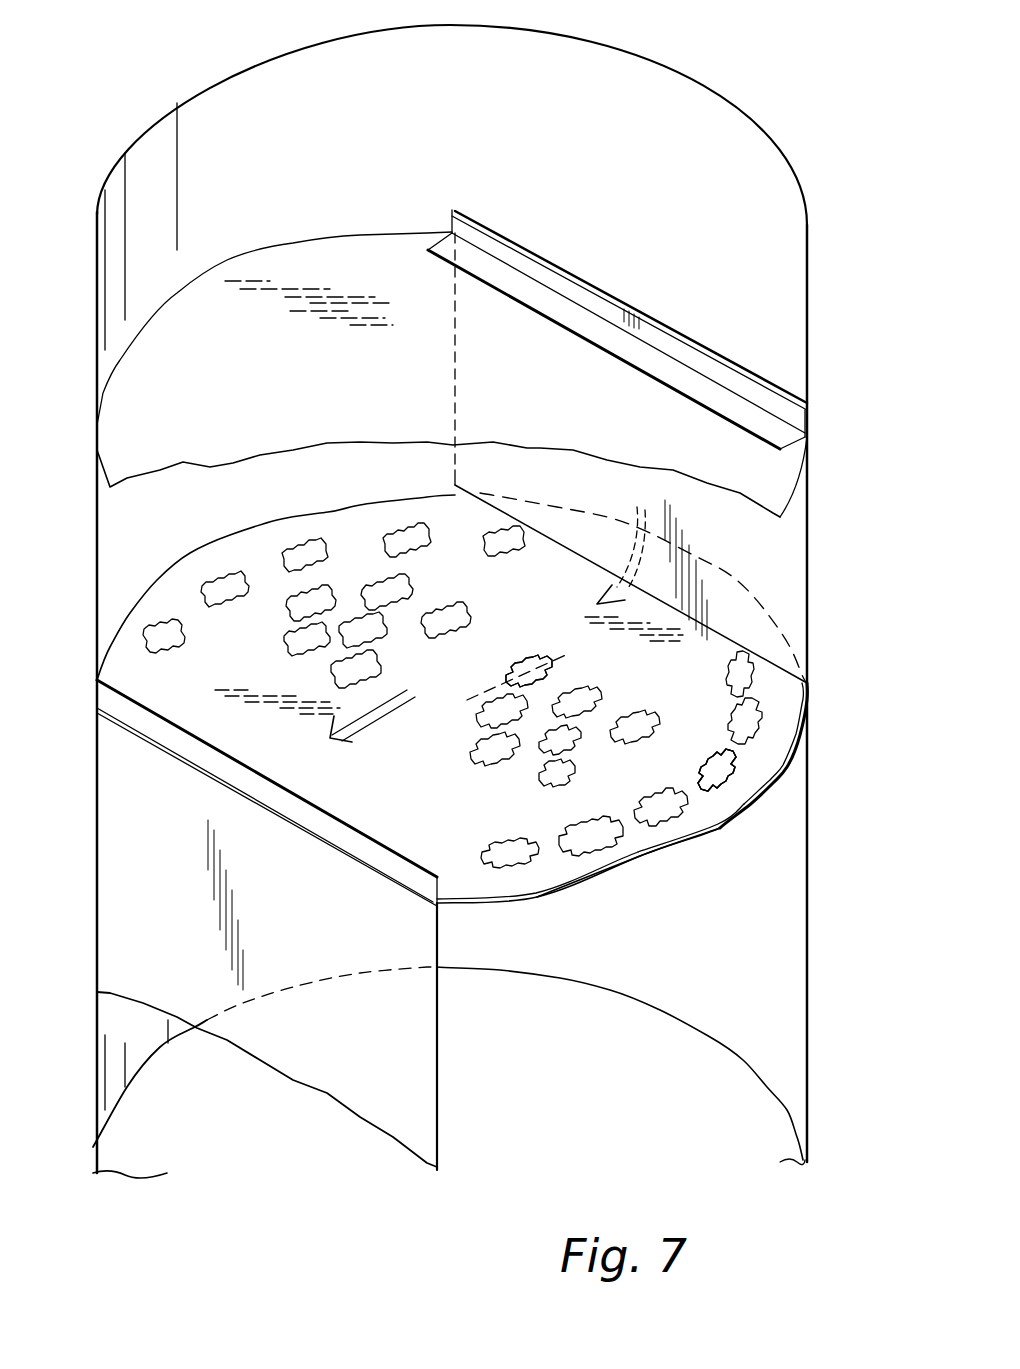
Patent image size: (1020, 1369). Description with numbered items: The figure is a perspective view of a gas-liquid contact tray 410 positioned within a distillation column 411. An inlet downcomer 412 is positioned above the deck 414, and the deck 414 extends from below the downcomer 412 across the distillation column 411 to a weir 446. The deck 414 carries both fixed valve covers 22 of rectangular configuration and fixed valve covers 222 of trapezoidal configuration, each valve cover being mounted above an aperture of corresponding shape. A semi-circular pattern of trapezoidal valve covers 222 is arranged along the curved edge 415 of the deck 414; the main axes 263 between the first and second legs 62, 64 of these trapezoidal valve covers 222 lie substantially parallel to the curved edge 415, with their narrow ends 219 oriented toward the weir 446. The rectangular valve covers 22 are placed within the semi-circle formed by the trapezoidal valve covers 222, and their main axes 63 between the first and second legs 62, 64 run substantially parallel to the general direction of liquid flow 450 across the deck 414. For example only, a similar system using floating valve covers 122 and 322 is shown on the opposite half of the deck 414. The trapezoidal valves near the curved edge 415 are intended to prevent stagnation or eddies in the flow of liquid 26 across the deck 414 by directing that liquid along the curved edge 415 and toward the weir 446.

The distillation column 411 is at (807, 287).
The inlet downcomer 412 is at (783, 541).
The weir 446 is at (145, 722).
The gas-liquid contact tray 410 is at (498, 698).
The narrow ends 219 is at (768, 779).
The deck 414 is at (745, 792).
The curved edge 415 is at (720, 830).
The floating valve covers 322 is at (150, 627).
The floating valve covers 122 is at (285, 648).
The fixed valve covers of rectangular configuration 22 is at (597, 693).
The fixed valve covers of trapezoidal configuration 222 is at (760, 712).
The first leg 62 is at (505, 678).
The second leg 64 is at (547, 660).
The main axes 263 is at (742, 752).
The main axes 63 is at (575, 650).
The flow of liquid 26 is at (615, 585).
The general direction of liquid flow 450 is at (380, 722).